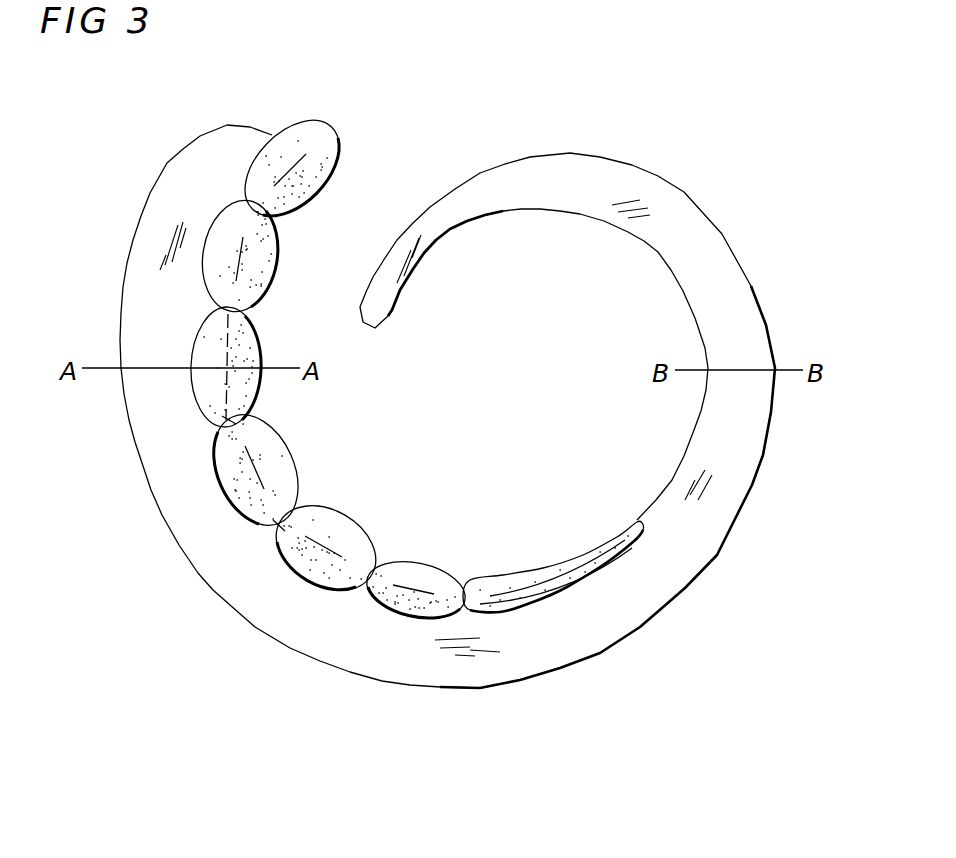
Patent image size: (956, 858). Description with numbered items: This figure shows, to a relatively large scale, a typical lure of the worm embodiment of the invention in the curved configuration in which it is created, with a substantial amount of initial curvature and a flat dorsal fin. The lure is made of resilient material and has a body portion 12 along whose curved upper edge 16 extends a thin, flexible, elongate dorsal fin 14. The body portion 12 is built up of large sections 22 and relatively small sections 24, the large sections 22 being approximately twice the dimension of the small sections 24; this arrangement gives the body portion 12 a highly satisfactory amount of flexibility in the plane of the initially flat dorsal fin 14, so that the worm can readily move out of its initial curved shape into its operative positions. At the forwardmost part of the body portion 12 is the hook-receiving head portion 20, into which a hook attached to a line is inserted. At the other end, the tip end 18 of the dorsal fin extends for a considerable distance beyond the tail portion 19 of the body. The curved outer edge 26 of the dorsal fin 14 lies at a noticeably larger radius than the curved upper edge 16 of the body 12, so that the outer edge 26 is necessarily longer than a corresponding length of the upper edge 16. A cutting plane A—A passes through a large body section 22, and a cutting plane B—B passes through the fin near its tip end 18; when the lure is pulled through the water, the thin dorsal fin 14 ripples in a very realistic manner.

The body portion 12 is at (347, 530).
The dorsal fin 14 is at (157, 193).
The upper edge 16 is at (195, 343).
The tip end 18 is at (510, 177).
The tail portion 19 is at (637, 522).
The head portion 20 is at (322, 108).
The large sections 22 is at (203, 385).
The small sections 24 is at (227, 423).
The outer edge 26 is at (457, 690).